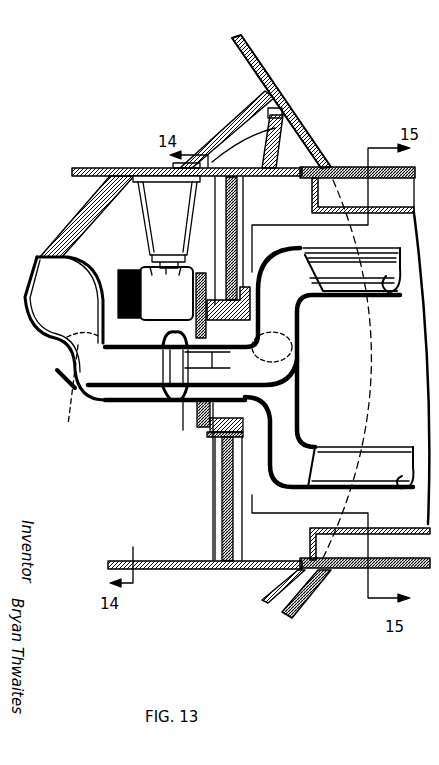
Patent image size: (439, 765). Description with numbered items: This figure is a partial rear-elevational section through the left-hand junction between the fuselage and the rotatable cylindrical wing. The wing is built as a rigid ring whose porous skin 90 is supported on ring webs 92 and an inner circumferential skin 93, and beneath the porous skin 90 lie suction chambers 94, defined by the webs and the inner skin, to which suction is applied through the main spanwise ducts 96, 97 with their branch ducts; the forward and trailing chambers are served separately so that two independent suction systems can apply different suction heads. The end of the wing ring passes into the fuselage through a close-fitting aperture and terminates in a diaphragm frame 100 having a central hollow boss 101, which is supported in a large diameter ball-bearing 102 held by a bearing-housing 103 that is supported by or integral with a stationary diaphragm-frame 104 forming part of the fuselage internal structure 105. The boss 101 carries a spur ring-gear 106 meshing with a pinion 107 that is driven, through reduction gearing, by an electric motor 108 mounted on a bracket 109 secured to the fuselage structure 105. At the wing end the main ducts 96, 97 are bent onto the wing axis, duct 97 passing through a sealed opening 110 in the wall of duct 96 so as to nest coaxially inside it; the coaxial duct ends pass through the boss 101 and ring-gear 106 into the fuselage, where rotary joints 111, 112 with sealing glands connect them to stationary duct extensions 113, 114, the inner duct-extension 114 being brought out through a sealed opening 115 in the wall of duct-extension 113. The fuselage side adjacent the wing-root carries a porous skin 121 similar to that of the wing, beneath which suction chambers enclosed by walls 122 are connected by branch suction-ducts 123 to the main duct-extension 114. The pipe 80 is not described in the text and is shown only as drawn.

The pipe 80 is at (257, 58).
The porous sheet skin 90 is at (390, 178).
The ring web 92 is at (312, 197).
The inner circumferential skin 93 is at (400, 256).
The suction chamber 94 is at (386, 203).
The main spanwise duct 96 is at (382, 458).
The main spanwise duct 97 is at (370, 278).
The diaphragm frame 100 is at (238, 479).
The central hollow boss 101 is at (228, 315).
The ball-bearing 102 is at (250, 422).
The bearing-housing 103 is at (213, 443).
The stationary diaphragm-frame 104 is at (226, 490).
The fuselage internal structure 105 is at (237, 115).
The spur ring-gear 106 is at (197, 425).
The pinion 107 is at (203, 272).
The electric motor 108 is at (152, 283).
The bracket 109 is at (157, 215).
The sealed opening 110 is at (302, 328).
The rotary joint 111 is at (167, 407).
The rotary joint 112 is at (125, 419).
The stationary duct extension 113 is at (62, 380).
The stationary duct extension 114 is at (62, 322).
The sealed opening 115 is at (66, 397).
The porous skin 121 is at (331, 168).
The suction chamber wall 122 is at (268, 110).
The branch suction-duct 123 is at (238, 147).